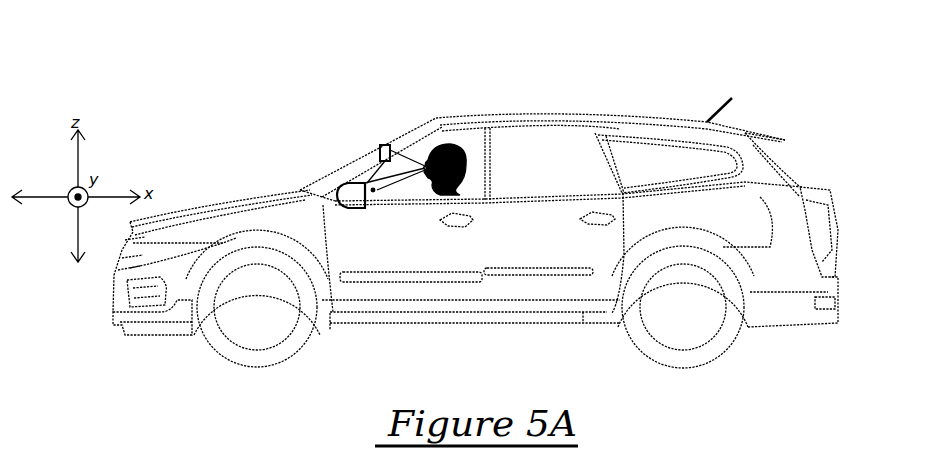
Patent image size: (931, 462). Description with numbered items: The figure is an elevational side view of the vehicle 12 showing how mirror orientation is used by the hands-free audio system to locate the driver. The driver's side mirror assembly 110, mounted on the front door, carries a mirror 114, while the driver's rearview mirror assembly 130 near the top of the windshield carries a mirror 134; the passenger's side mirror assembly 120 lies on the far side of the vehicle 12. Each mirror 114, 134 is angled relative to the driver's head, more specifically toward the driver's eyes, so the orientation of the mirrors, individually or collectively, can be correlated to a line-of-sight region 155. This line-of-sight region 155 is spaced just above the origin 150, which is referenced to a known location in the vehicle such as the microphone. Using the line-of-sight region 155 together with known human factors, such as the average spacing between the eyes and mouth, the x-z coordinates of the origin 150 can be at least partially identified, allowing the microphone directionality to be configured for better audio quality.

The vehicle 12 is at (742, 72).
The driver's side mirror assembly 110 is at (338, 186).
The mirror 114 is at (368, 208).
The passenger's side mirror assembly 120 is at (378, 193).
The driver's rearview mirror assembly 130 is at (381, 144).
The mirror 134 is at (396, 140).
The origin 150 is at (426, 180).
The line-of-sight (LOS) region 155 is at (425, 157).